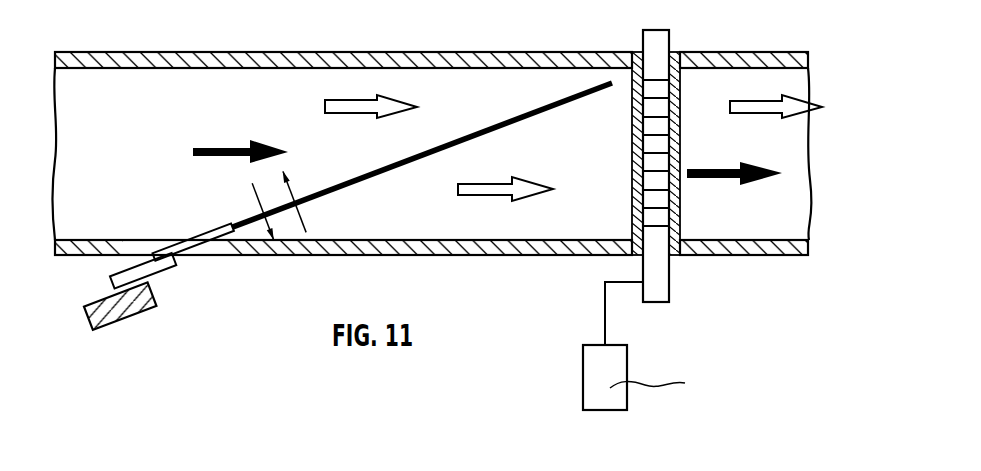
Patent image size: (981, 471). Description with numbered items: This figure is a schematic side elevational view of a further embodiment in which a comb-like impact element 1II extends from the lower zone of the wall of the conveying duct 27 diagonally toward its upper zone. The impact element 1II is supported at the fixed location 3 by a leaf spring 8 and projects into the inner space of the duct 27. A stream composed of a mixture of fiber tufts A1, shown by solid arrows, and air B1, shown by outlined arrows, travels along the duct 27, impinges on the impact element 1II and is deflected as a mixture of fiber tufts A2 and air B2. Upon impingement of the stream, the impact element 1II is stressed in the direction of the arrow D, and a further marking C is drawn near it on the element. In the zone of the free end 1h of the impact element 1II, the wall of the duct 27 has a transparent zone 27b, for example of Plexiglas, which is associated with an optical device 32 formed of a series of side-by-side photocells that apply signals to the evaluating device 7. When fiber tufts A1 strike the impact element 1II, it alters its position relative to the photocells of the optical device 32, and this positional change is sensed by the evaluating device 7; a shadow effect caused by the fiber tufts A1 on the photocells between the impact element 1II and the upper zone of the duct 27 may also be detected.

The conveying duct 27 is at (460, 52).
The transparent zone 27b is at (677, 218).
The free end 1h is at (593, 90).
The comb-like impact element 1II is at (414, 152).
The optical device 32 is at (662, 88).
The leaf spring 8 is at (170, 263).
The fixed location 3 is at (127, 312).
The evaluating device 7 is at (614, 386).
The fiber tuft stream A1 is at (217, 147).
The deflected fiber tuft stream A2 is at (725, 180).
The incoming air stream B1 is at (358, 113).
The deflected air stream B2 is at (757, 100).
The distance C is at (303, 213).
The stressing direction arrow D is at (252, 186).